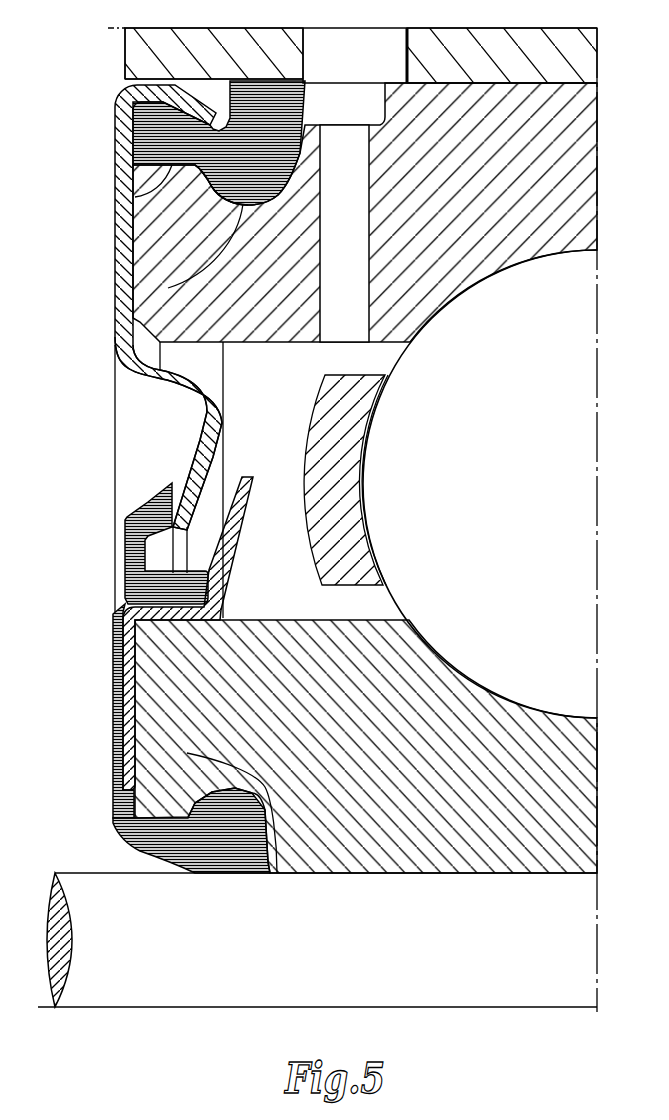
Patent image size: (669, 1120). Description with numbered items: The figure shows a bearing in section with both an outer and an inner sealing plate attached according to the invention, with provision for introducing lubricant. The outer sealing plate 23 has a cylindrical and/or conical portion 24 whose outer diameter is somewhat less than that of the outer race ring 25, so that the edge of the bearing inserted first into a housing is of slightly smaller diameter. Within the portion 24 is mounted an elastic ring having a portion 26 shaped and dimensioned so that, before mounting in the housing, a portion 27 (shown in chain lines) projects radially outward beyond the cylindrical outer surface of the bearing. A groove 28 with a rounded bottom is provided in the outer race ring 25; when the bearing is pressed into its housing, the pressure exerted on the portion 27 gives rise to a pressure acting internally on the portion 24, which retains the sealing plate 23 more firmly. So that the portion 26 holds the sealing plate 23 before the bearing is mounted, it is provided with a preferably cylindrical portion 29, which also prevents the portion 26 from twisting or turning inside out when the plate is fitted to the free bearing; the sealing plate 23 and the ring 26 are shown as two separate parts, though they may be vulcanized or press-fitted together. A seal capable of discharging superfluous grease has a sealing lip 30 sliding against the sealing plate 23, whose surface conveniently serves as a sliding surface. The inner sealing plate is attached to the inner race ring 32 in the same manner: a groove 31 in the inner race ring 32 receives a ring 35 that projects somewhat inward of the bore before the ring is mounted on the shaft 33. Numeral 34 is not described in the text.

The projecting portion of elastic ring 27 is at (290, 73).
The cylindrical and/or conical portion of sealing plate 24 is at (167, 90).
The cylindrical portion of elastic ring 29 is at (150, 193).
The elastic ring portion 26 is at (222, 200).
The groove 28 is at (168, 287).
The outer race ring 25 is at (173, 320).
The sealing plate 23 is at (167, 387).
The sealing lip 30 is at (157, 500).
The lower seal casing 34 is at (113, 653).
The inner race ring 32 is at (157, 703).
The groove 31 is at (187, 753).
The ring 35 is at (160, 812).
The shaft 33 is at (110, 897).